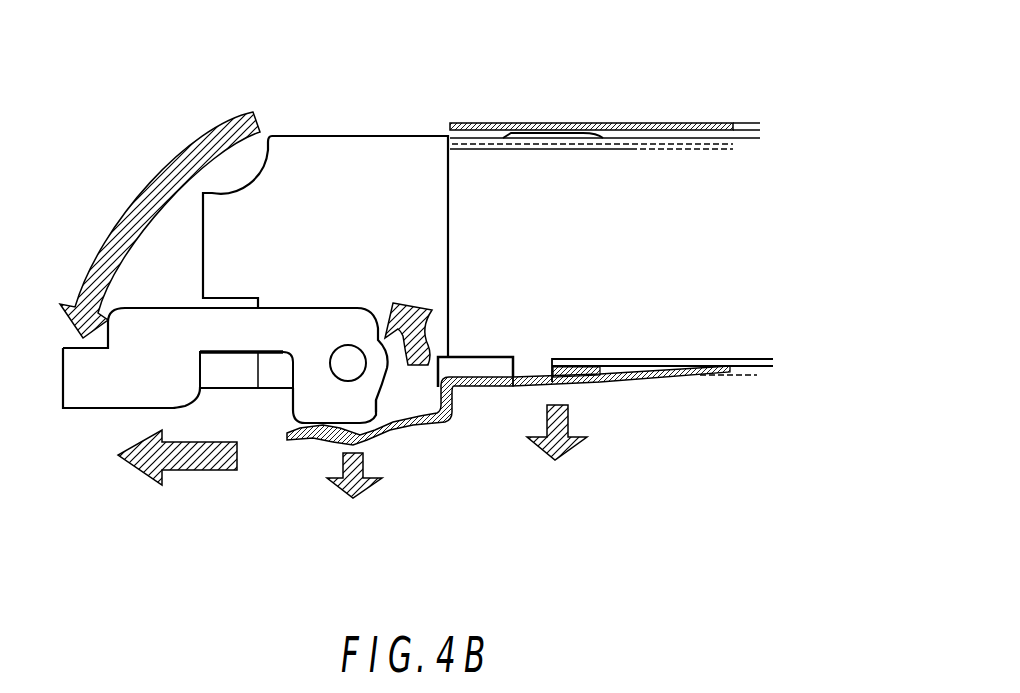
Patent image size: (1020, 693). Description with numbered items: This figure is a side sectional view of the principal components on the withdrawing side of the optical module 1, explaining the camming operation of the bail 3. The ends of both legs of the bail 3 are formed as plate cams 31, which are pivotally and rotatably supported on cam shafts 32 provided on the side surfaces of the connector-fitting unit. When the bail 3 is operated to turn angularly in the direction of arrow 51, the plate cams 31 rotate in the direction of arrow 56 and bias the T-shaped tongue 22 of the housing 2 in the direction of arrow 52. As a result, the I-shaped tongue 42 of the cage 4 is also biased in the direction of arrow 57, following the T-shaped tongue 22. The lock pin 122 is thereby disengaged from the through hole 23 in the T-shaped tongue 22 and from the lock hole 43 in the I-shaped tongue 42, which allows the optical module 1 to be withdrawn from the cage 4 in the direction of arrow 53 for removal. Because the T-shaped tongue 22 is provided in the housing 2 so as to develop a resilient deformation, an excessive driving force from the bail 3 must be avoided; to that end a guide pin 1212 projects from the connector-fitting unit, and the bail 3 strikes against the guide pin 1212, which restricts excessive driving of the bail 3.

The optical module 1 is at (158, 62).
The housing 2 is at (480, 150).
The bail 3 is at (98, 388).
The cage 4 is at (655, 125).
The T-shaped tongue 22 is at (420, 422).
The through hole 23 is at (570, 385).
The plate cam 31 is at (322, 400).
The cam shaft 32 is at (348, 345).
The I-shaped tongue 42 is at (482, 393).
The lock hole 43 is at (550, 385).
The arrow indicating bail turning direction 51 is at (148, 188).
The arrow indicating biasing direction of T-shaped tongue 52 is at (353, 498).
The arrow indicating withdrawal direction 53 is at (185, 470).
The arrow indicating plate cam rotation direction 56 is at (405, 298).
The arrow indicating biasing direction of I-shaped tongue 57 is at (568, 462).
The lock pin 122 is at (532, 365).
The guide pin 1212 is at (233, 373).